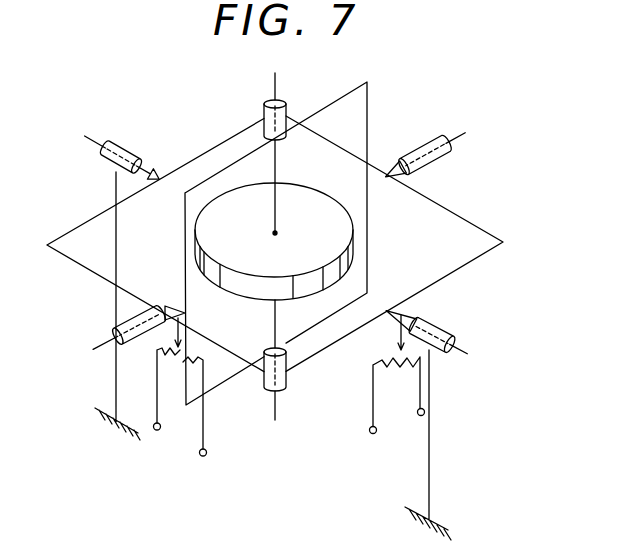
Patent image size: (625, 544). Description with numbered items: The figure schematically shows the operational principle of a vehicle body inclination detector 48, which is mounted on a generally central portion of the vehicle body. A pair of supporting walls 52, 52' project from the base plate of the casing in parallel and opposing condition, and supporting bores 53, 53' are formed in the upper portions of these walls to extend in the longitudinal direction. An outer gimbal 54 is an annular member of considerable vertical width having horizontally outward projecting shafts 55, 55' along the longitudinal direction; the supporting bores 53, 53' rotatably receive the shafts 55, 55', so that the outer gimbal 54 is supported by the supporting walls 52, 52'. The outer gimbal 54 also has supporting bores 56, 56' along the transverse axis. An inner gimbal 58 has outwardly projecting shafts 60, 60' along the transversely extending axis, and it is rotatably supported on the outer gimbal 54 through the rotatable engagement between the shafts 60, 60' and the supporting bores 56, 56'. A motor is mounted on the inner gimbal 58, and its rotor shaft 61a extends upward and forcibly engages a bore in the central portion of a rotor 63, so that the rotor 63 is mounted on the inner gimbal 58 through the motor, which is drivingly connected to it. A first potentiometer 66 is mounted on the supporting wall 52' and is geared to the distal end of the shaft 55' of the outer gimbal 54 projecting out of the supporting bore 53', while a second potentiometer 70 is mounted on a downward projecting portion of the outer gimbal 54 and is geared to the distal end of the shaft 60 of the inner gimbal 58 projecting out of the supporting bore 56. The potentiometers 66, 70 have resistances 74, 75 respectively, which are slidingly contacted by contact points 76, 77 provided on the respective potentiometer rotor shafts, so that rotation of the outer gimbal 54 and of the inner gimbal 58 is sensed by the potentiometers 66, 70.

The vehicle body inclination detector 48 is at (525, 103).
The supporting wall 52 is at (109, 306).
The supporting wall 52' is at (474, 445).
The supporting bore 53 is at (139, 132).
The supporting bore 53' is at (478, 335).
The outer gimbal 54 is at (478, 222).
The shaft 55 is at (156, 201).
The shaft 55' is at (437, 304).
The supporting bore 56 is at (97, 323).
The supporting bore 56' is at (446, 160).
The inner gimbal 58 is at (370, 117).
The shaft 60 is at (162, 283).
The shaft 60' is at (404, 203).
The rotor shaft 61a is at (277, 168).
The rotor 63 is at (313, 216).
The first potentiometer 66 is at (390, 350).
The second potentiometer 70 is at (190, 347).
The resistance 74 is at (395, 373).
The resistance 75 is at (180, 362).
The contact point 76 is at (398, 328).
The contact point 77 is at (162, 341).